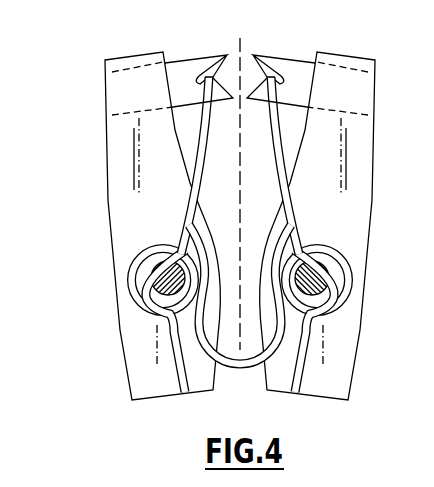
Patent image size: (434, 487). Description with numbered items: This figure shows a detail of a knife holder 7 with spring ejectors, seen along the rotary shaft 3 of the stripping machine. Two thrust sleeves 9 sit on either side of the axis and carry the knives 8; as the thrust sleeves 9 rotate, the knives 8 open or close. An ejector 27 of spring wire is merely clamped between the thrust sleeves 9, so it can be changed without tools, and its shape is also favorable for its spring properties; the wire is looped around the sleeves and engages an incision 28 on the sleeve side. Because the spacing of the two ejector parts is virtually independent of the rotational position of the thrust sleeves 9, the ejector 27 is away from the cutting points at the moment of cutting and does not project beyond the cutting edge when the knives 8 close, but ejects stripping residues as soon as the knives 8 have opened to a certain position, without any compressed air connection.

The knife holder 7 is at (113, 88).
The stripping knife 8 is at (187, 67).
The ejector 27 is at (296, 72).
The rotary shaft 3 is at (138, 252).
The thrust sleeve 9 is at (142, 312).
The incision 28 is at (356, 275).